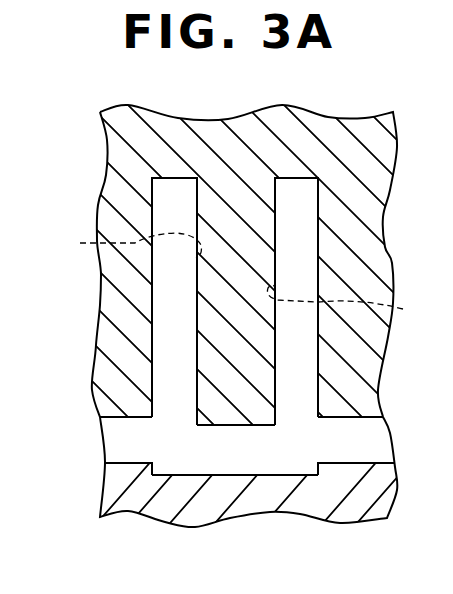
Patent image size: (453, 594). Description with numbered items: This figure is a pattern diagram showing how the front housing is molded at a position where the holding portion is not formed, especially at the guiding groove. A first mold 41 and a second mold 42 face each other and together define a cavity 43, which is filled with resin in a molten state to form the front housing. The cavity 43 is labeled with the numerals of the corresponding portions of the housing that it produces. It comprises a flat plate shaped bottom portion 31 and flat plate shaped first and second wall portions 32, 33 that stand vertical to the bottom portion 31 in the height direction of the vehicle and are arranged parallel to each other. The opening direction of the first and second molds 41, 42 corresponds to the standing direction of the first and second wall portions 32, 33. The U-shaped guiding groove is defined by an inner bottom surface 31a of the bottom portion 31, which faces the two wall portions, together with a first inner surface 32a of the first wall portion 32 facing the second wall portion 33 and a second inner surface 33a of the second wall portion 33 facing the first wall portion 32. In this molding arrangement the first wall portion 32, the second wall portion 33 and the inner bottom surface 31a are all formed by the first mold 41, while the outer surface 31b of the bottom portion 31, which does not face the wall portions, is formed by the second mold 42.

The bottom portion 31 is at (244, 481).
The inner bottom surface 31a is at (215, 425).
The outer surface 31b is at (287, 481).
The first wall portion 32 is at (150, 328).
The first inner surface 32a is at (115, 244).
The second wall portion 33 is at (330, 240).
The second inner surface 33a is at (358, 307).
The first mold 41 is at (110, 298).
The second mold 42 is at (110, 478).
The cavity 43 is at (256, 460).